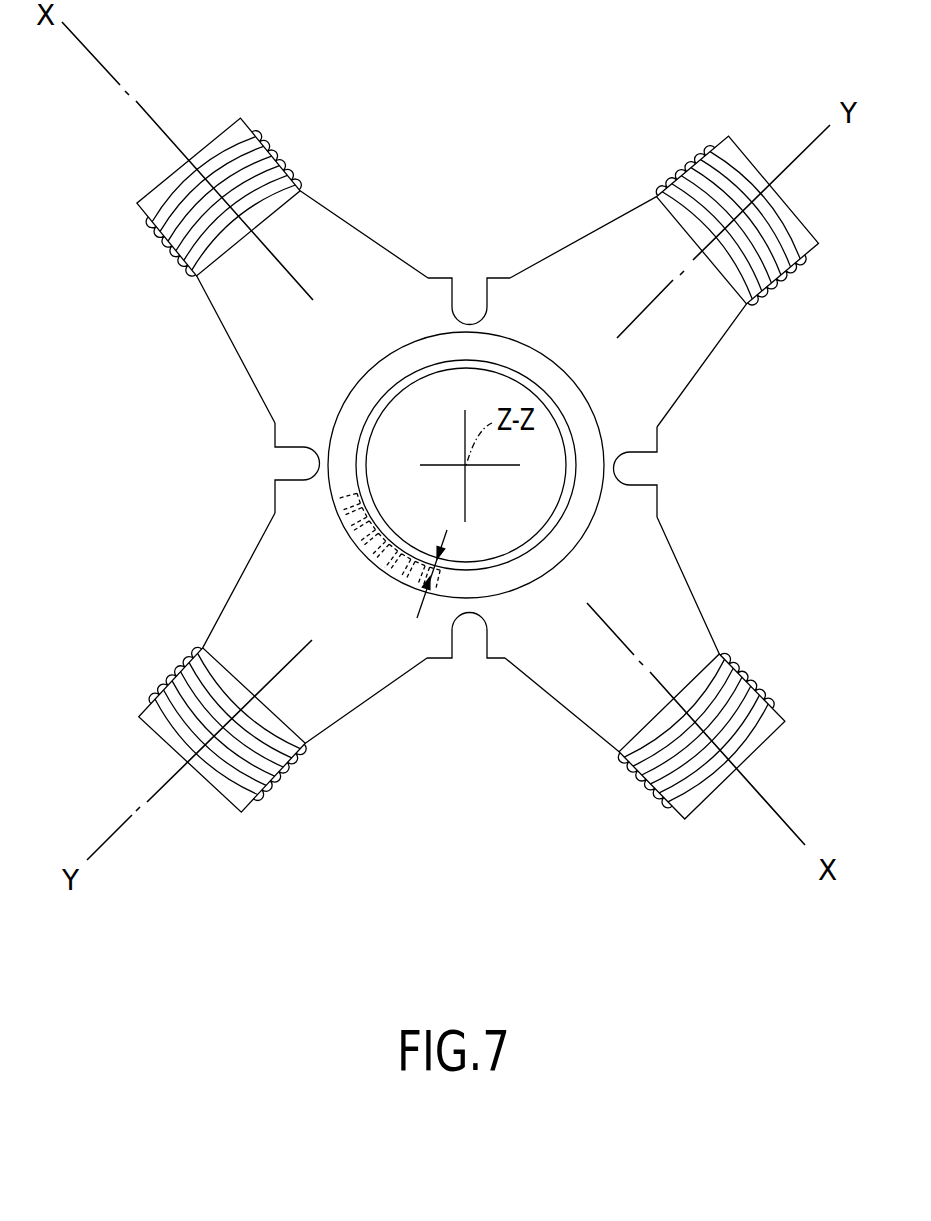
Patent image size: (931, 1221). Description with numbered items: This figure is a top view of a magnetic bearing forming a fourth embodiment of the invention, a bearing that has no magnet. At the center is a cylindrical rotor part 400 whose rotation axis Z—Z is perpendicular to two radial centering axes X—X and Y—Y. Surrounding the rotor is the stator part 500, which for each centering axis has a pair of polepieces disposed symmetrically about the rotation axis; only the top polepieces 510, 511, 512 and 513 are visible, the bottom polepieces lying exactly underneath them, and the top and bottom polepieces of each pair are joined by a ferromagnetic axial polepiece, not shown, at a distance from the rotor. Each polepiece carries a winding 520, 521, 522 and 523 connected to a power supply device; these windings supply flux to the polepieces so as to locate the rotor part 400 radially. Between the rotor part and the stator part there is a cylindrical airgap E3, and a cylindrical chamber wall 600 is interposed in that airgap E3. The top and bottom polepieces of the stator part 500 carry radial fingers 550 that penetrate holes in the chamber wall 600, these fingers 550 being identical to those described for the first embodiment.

The cylindrical rotor part 400 is at (540, 490).
The stator part 500 is at (272, 318).
The top polepiece 510 is at (258, 613).
The top polepiece 511 is at (662, 605).
The top polepiece 512 is at (590, 270).
The top polepiece 513 is at (237, 282).
The winding 520 is at (170, 663).
The winding 521 is at (758, 680).
The winding 522 is at (683, 153).
The winding 523 is at (287, 145).
The radial fingers 550 is at (330, 508).
The chamber wall 600 is at (352, 424).
The cylindrical airgap E3 is at (440, 567).